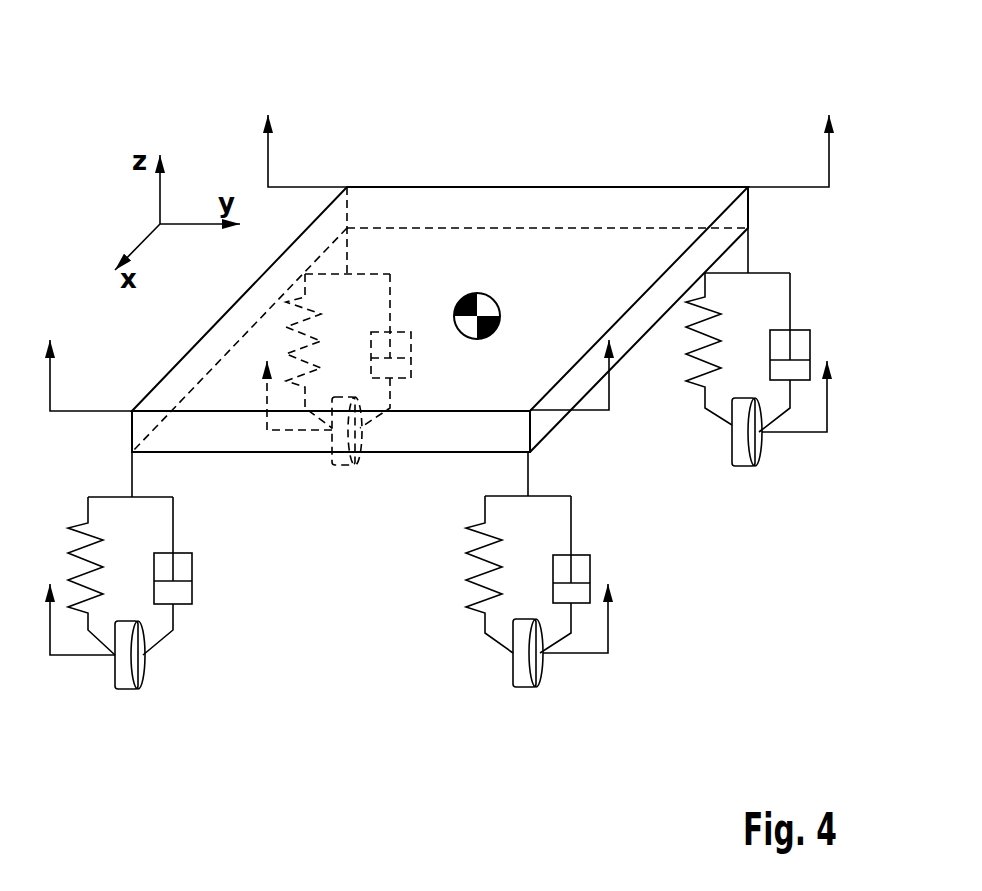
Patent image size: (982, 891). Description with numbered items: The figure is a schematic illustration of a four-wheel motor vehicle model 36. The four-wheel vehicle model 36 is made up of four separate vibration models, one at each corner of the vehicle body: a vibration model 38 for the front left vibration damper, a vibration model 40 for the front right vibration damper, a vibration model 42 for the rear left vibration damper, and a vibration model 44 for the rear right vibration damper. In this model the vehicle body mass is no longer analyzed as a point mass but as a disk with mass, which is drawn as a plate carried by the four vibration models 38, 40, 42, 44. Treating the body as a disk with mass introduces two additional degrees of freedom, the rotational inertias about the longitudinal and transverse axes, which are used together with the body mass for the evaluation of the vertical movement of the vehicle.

The four-wheel motor vehicle model 36 is at (527, 128).
The vibration model for the front left vibration damper 38 is at (638, 658).
The vibration model for the front right vibration damper 40 is at (173, 658).
The vibration model for the rear left vibration damper 42 is at (732, 475).
The vibration model for the rear right vibration damper 44 is at (377, 427).